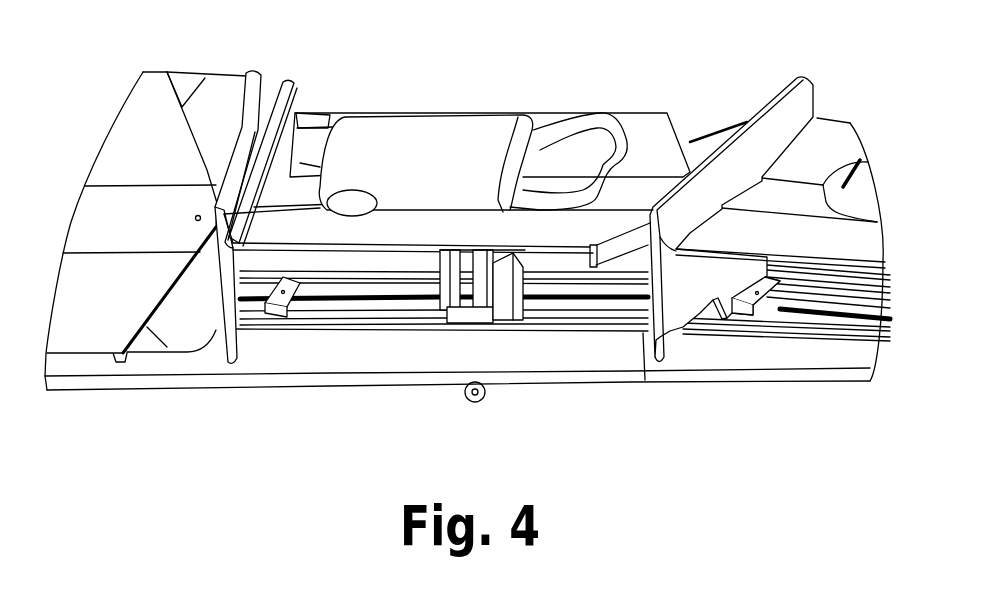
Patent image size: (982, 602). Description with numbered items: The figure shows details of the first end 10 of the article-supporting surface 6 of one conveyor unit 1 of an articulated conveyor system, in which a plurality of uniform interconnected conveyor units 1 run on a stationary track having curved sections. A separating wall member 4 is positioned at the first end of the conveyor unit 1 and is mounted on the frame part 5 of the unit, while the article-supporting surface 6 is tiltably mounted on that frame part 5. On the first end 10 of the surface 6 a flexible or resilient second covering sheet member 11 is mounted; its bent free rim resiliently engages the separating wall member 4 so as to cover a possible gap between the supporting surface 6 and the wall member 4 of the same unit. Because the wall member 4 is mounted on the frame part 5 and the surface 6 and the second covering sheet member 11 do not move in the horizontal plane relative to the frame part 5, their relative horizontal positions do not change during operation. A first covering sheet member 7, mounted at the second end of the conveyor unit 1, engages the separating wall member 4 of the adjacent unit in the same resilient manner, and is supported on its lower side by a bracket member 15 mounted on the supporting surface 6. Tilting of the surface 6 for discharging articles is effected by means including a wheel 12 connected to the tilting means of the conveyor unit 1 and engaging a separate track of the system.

The conveyor unit 1 is at (553, 83).
The separating wall member 4 is at (797, 103).
The frame part 5 is at (330, 307).
The article-supporting surface 6 is at (387, 232).
The first covering sheet member 7 is at (713, 143).
The first end 10 is at (313, 180).
The second covering sheet member 11 is at (310, 117).
The wheel 12 is at (485, 403).
The bracket member 15 is at (592, 265).